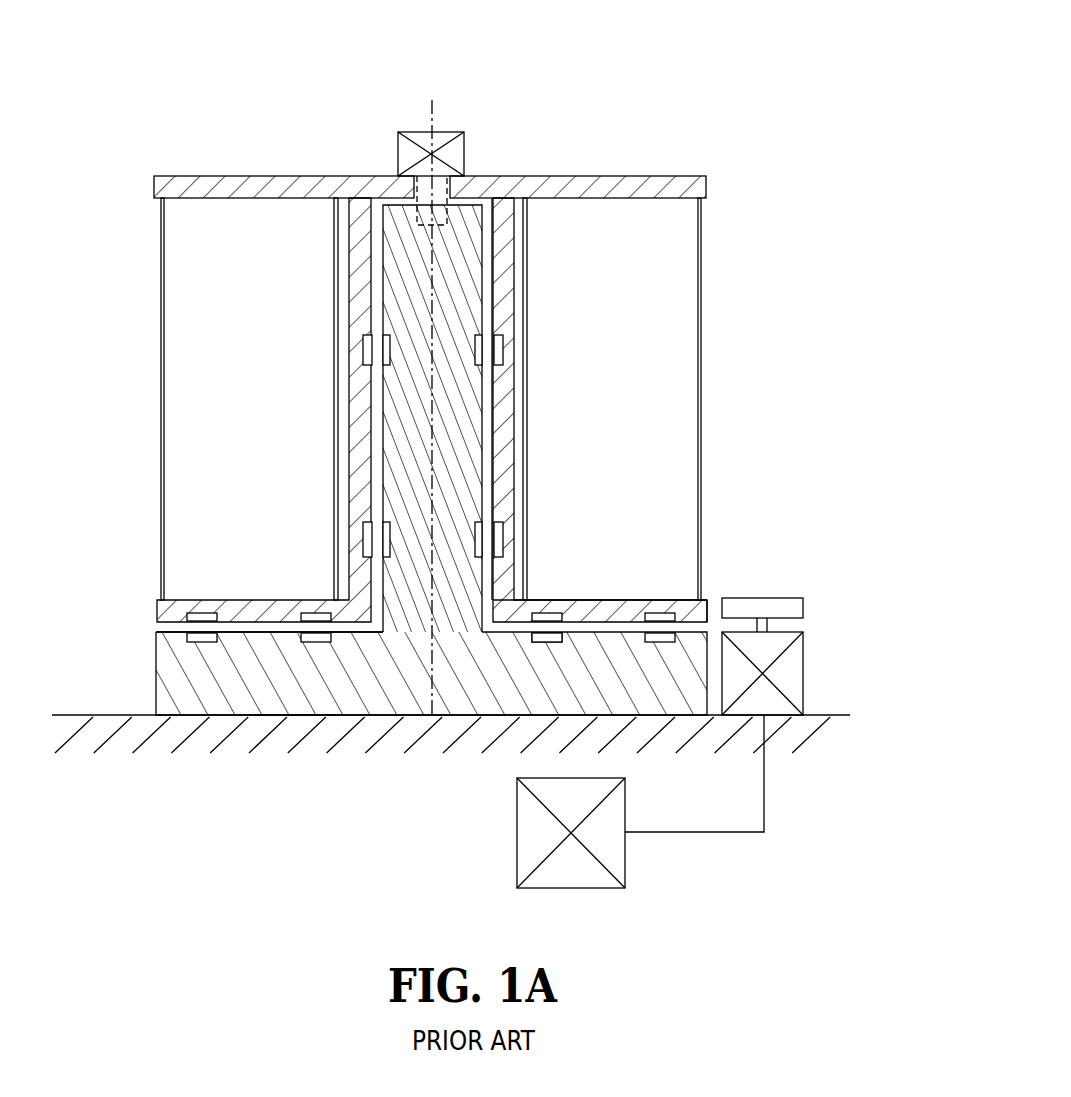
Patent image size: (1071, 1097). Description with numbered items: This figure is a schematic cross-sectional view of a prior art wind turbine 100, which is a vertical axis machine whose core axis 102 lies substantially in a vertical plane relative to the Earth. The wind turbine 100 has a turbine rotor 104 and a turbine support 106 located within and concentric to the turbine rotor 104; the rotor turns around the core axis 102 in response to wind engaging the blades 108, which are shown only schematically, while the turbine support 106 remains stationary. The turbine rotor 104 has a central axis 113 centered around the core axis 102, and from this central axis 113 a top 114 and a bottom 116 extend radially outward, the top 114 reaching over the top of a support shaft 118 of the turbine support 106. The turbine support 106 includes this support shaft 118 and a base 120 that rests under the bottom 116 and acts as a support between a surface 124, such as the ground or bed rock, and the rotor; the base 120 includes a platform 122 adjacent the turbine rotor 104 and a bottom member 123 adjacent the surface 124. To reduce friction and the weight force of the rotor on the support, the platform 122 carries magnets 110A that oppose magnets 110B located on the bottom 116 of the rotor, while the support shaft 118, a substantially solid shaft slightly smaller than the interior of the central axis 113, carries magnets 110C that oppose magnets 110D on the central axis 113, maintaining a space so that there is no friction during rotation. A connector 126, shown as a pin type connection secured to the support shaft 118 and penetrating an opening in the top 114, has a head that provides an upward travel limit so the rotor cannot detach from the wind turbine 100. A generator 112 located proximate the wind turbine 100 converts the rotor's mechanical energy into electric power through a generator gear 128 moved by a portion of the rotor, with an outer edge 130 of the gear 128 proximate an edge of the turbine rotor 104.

The wind turbine 100 is at (682, 41).
The core axis 102 is at (430, 108).
The turbine rotor 104 is at (507, 304).
The turbine support 106 is at (548, 508).
The blades 108 is at (160, 293).
The magnets 110A is at (200, 615).
The magnets 110B is at (545, 643).
The magnets 110C is at (385, 337).
The magnets 110D is at (358, 345).
The generator 112 is at (812, 660).
The central axis 113 is at (495, 426).
The top 114 is at (617, 175).
The bottom 116 is at (693, 597).
The support shaft 118 is at (390, 390).
The base 120 is at (240, 690).
The platform 122 is at (158, 628).
The bottom member 123 is at (293, 720).
The surface 124 is at (125, 736).
The connector 126 is at (466, 152).
The generator gear 128 is at (812, 604).
The outer edge 130 is at (717, 600).